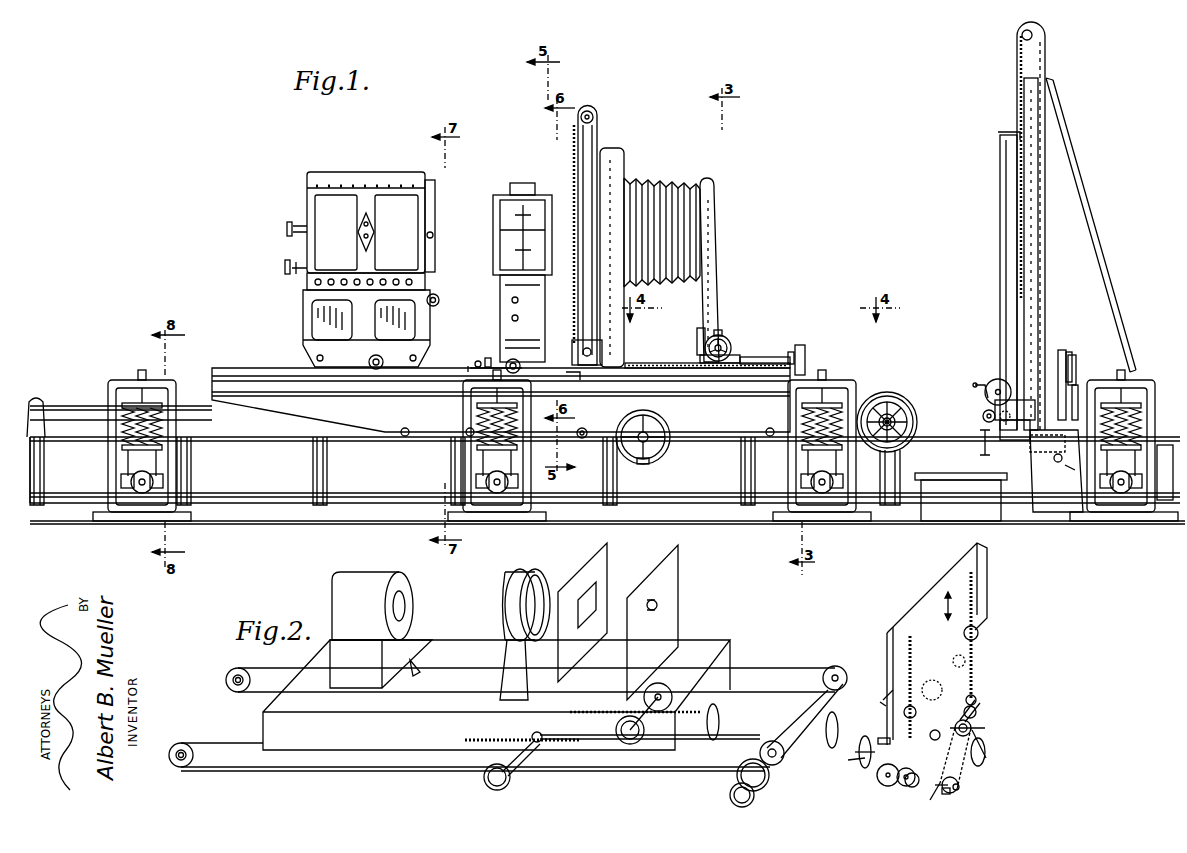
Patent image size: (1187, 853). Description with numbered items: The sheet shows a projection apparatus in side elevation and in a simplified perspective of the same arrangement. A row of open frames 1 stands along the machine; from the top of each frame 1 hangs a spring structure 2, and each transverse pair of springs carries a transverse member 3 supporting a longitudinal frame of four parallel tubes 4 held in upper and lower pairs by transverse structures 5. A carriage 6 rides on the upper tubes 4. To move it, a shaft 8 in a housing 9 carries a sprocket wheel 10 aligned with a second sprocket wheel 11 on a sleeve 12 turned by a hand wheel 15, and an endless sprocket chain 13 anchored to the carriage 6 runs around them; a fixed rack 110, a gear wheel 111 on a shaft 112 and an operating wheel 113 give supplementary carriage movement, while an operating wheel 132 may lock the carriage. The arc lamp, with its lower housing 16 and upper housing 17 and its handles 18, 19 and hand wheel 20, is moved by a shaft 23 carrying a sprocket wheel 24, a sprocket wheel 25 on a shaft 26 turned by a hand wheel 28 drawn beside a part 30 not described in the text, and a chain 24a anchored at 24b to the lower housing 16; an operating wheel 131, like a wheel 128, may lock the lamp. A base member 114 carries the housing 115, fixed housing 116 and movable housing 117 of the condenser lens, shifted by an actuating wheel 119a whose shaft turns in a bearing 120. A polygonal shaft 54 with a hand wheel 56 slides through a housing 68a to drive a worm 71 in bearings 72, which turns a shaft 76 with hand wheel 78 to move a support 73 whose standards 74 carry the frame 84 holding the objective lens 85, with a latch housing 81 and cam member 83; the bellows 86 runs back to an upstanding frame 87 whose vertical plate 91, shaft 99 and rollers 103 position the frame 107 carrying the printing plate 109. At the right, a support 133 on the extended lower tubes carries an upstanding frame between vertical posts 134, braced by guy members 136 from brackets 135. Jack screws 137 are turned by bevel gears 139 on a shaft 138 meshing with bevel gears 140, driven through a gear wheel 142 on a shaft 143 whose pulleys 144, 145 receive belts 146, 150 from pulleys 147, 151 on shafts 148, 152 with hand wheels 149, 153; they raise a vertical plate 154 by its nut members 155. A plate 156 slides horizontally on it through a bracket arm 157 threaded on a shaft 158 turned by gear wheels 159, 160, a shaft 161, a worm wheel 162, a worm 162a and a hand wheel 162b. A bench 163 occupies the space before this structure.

In FIG. 1, the open frames 1 is at (114, 380).
In FIG. 1, the spring structure 2 is at (165, 440).
In FIG. 1, the transverse member 3 is at (121, 474).
In FIG. 1, the tubes or rods 4 is at (95, 445).
In FIG. 1, the transversely extending structures 5 is at (44, 468).
In FIG. 1, the carriage 6 is at (238, 370).
In FIG. 2, the carriage 6 is at (300, 672).
In FIG. 2, the shaft 8 is at (172, 762).
In FIG. 1, the housing 9 is at (38, 400).
In FIG. 2, the sprocket wheel 10 is at (176, 745).
In FIG. 2, the second sprocket wheel 11 is at (780, 761).
In FIG. 2, the sleeve 12 is at (775, 766).
In FIG. 1, the endless sprocket chain 13 is at (68, 405).
In FIG. 2, the endless sprocket chain 13 is at (650, 770).
In FIG. 1, the hand wheel 15 is at (895, 398).
In FIG. 2, the hand wheel 15 is at (737, 776).
In FIG. 1, the lower housing 16 is at (303, 320).
In FIG. 2, the lower housing 16 is at (420, 650).
In FIG. 1, the upper housing 17 is at (328, 174).
In FIG. 2, the upper housing 17 is at (410, 597).
In FIG. 1, the actuating handle 18 is at (289, 224).
In FIG. 1, the actuating handle 19 is at (285, 270).
In FIG. 1, the hand wheel 20 is at (438, 296).
In FIG. 2, the shaft 23 is at (227, 683).
In FIG. 2, the sprocket wheel 24 is at (240, 670).
In FIG. 2, the sprocket chain 24a is at (285, 668).
In FIG. 2, the chain anchor 24b is at (420, 668).
In FIG. 2, the sprocket wheel 25 is at (836, 666).
In FIG. 2, the shaft 26 is at (805, 712).
In FIG. 1, the hand wheel 28 is at (885, 412).
In FIG. 2, the hand wheel 28 is at (730, 796).
In FIG. 1, the spoked wheel 30 is at (877, 410).
In FIG. 2, the shaft 54 is at (752, 733).
In FIG. 2, the hand wheel 56 is at (828, 728).
In FIG. 1, the housing 68a is at (805, 348).
In FIG. 1, the worm 71 is at (666, 363).
In FIG. 1, the bearings 72 is at (792, 352).
In FIG. 1, the support 73 is at (760, 357).
In FIG. 1, the standards 74 is at (714, 240).
In FIG. 1, the shaft 76 is at (728, 340).
In FIG. 1, the hand wheel 78 is at (703, 356).
In FIG. 1, the housing 81 is at (700, 335).
In FIG. 1, the member 83 is at (719, 330).
In FIG. 1, the frame 84 is at (704, 180).
In FIG. 2, the objective lens 85 is at (660, 603).
In FIG. 1, the bellows structure 86 is at (648, 178).
In FIG. 1, the upstanding frame 87 is at (614, 160).
In FIG. 1, the vertical plate 91 is at (592, 140).
In FIG. 1, the shaft 99 is at (602, 348).
In FIG. 1, the rollers 103 is at (590, 112).
In FIG. 2, the frame 107 is at (600, 562).
In FIG. 2, the printing plate 109 is at (627, 598).
In FIG. 2, the fixed rack 110 is at (485, 739).
In FIG. 2, the gear wheel 111 is at (533, 734).
In FIG. 1, the shaft 112 is at (650, 462).
In FIG. 2, the shaft 112 is at (530, 752).
In FIG. 1, the operating wheel 113 is at (665, 425).
In FIG. 2, the operating wheel 113 is at (507, 785).
In FIG. 1, the base member 114 is at (487, 364).
In FIG. 1, the housing 115 is at (500, 297).
In FIG. 1, the fixed housing 116 is at (535, 184).
In FIG. 2, the fixed housing 116 is at (535, 572).
In FIG. 1, the movable housing 117 is at (500, 195).
In FIG. 2, the movable housing 117 is at (505, 590).
In FIG. 1, the actuating wheel 119a is at (475, 362).
In FIG. 1, the bearing 120 is at (485, 360).
In FIG. 1, the wheel 128 is at (508, 360).
In FIG. 1, the operating wheel 131 is at (369, 358).
In FIG. 1, the operating wheel 132 is at (586, 428).
In FIG. 1, the support 133 is at (1050, 500).
In FIG. 1, the vertical posts 134 is at (1048, 68).
In FIG. 1, the upstanding bracket 135 is at (1135, 522).
In FIG. 1, the guy member 136 is at (1125, 312).
In FIG. 2, the jack screws 137 is at (912, 645).
In FIG. 2, the shaft 138 is at (936, 790).
In FIG. 2, the bevel gears 139 is at (911, 787).
In FIG. 2, the bevel gears 140 is at (982, 705).
In FIG. 2, the gear wheel 142 is at (977, 700).
In FIG. 2, the shaft 143 is at (985, 727).
In FIG. 1, the pulley 144 is at (1076, 370).
In FIG. 2, the pulley 144 is at (968, 735).
In FIG. 1, the pulley 145 is at (1062, 350).
In FIG. 2, the pulley 145 is at (972, 730).
In FIG. 1, the endless belt 146 is at (1078, 382).
In FIG. 2, the endless belt 146 is at (960, 760).
In FIG. 1, the pulley 147 is at (1064, 445).
In FIG. 2, the pulley 147 is at (950, 793).
In FIG. 1, the shaft 148 is at (1070, 470).
In FIG. 2, the shaft 148 is at (962, 788).
In FIG. 2, the operating hand wheel 149 is at (960, 785).
In FIG. 1, the endless belt 150 is at (1072, 360).
In FIG. 2, the endless belt 150 is at (984, 750).
In FIG. 1, the pulley 151 is at (1056, 462).
In FIG. 2, the pulley 151 is at (985, 752).
In FIG. 2, the shaft 152 is at (862, 740).
In FIG. 1, the operating hand wheel 153 is at (980, 442).
In FIG. 2, the operating hand wheel 153 is at (855, 760).
In FIG. 1, the vertical plate 154 is at (1038, 222).
In FIG. 2, the vertical plate 154 is at (935, 588).
In FIG. 2, the nut members 155 is at (978, 636).
In FIG. 1, the vertical plate 156 is at (1003, 230).
In FIG. 2, the vertical plate 156 is at (887, 648).
In FIG. 2, the bracket arm 157 is at (954, 661).
In FIG. 1, the horizontal shaft 158 is at (1015, 440).
In FIG. 2, the horizontal shaft 158 is at (884, 736).
In FIG. 2, the gear wheel 159 is at (900, 786).
In FIG. 2, the gear wheel 160 is at (877, 780).
In FIG. 1, the horizontal shaft 161 is at (983, 418).
In FIG. 2, the horizontal shaft 161 is at (895, 782).
In FIG. 1, the worm wheel 162 is at (999, 416).
In FIG. 2, the worm wheel 162 is at (935, 740).
In FIG. 1, the worm 162a is at (993, 380).
In FIG. 2, the worm 162a is at (932, 682).
In FIG. 1, the operating hand wheel 162b is at (975, 387).
In FIG. 2, the operating hand wheel 162b is at (885, 695).
In FIG. 1, the bench 163 is at (935, 478).